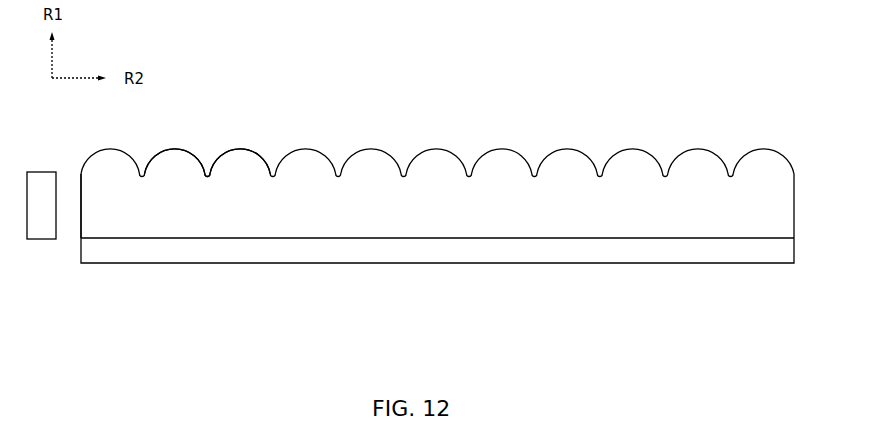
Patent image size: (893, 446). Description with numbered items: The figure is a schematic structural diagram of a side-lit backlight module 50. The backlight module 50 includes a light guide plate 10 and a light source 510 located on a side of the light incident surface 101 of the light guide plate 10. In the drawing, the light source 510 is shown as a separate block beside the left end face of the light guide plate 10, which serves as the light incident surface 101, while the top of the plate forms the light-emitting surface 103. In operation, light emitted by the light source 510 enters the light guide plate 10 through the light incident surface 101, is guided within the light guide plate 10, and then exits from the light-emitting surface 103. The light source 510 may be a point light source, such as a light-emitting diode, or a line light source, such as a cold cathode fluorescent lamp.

The backlight module 50 is at (766, 42).
The light guide plate 10 is at (235, 263).
The light incident surface 101 is at (80, 188).
The light-emitting surface 103 is at (253, 153).
The light source 510 is at (41, 240).